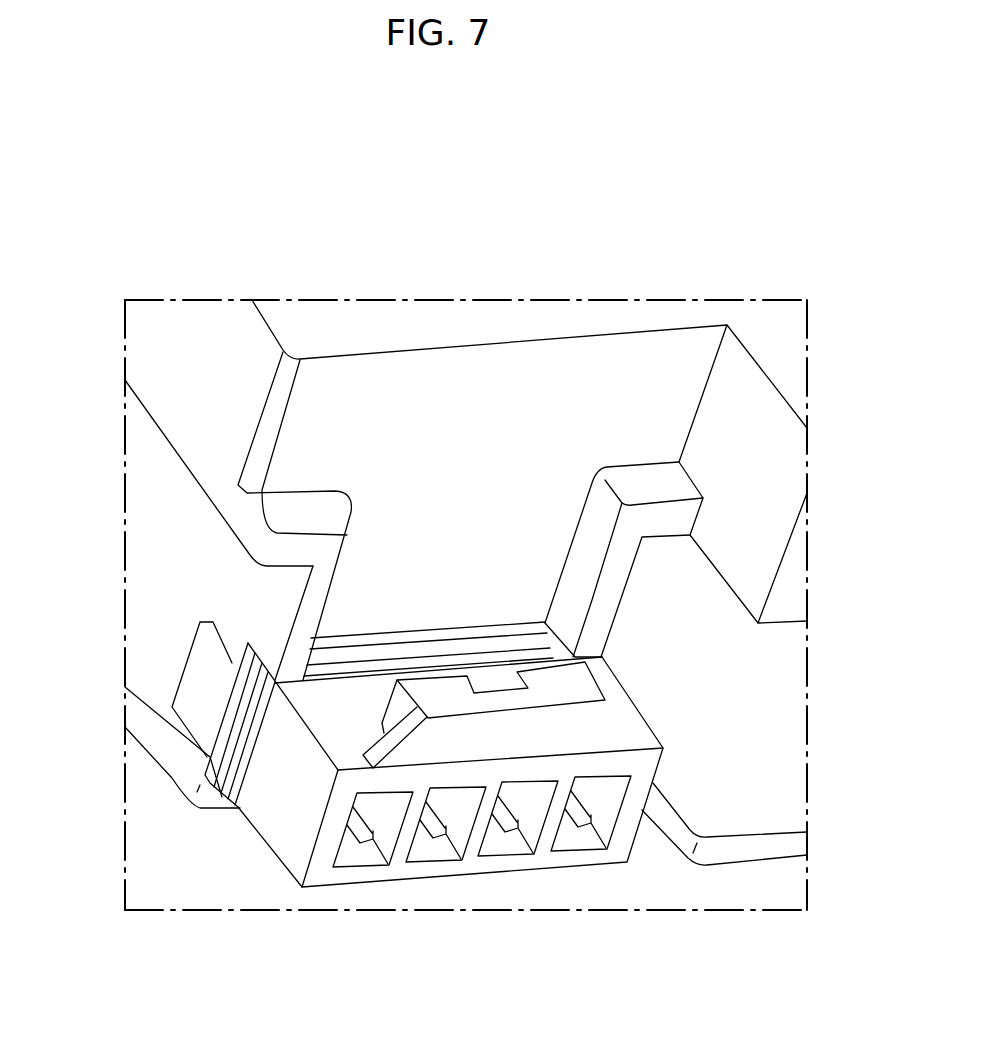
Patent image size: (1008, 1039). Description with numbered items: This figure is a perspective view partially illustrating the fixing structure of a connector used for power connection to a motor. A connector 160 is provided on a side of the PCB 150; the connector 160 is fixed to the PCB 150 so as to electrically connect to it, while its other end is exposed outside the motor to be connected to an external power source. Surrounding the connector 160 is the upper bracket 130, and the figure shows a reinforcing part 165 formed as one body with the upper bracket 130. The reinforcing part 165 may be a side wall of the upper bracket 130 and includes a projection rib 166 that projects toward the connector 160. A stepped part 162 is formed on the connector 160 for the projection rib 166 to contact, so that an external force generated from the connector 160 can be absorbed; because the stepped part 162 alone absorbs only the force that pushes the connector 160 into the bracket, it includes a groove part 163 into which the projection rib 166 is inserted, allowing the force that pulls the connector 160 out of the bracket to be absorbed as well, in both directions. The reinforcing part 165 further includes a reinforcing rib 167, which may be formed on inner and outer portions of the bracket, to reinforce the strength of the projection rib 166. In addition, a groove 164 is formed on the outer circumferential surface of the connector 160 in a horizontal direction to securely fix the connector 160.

The upper bracket 130 is at (333, 320).
The PCB 150 is at (742, 813).
The connector 160 is at (290, 838).
The stepped part 162 is at (172, 705).
The groove part 163 is at (243, 680).
The groove 164 is at (238, 752).
The reinforcing part 165 is at (263, 603).
The projection rib 166 is at (240, 643).
The reinforcing rib 167 is at (607, 605).